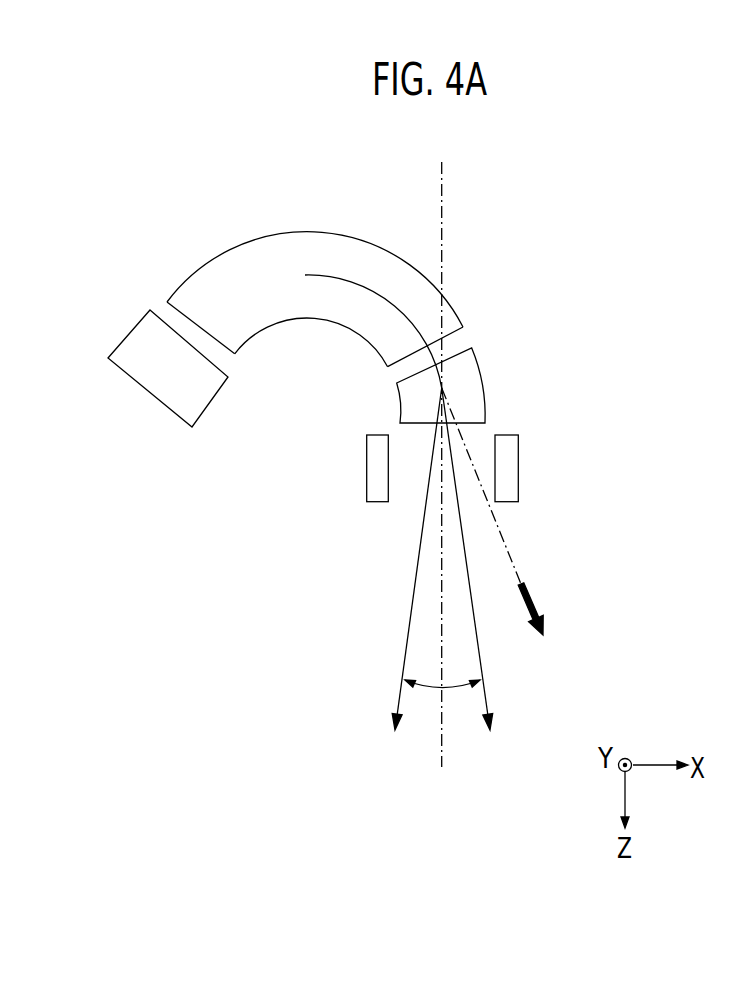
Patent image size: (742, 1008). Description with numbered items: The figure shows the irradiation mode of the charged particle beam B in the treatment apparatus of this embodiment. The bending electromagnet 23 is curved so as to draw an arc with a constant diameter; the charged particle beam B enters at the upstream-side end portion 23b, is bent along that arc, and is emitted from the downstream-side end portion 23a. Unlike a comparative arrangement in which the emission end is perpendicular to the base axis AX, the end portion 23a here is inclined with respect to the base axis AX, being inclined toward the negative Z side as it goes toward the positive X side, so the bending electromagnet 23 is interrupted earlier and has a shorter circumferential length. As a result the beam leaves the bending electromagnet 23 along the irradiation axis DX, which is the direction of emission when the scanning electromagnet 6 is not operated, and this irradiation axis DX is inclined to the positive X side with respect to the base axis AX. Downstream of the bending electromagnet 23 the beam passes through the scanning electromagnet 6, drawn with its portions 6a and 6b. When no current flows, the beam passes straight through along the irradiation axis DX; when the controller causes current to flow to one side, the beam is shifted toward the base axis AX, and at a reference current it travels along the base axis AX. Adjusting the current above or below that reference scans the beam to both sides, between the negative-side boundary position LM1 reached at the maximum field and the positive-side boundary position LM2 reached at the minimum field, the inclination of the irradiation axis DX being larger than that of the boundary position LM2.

The bending electromagnet 23 is at (323, 295).
The downstream-side end portion 23a is at (455, 338).
The upstream-side end portion 23b is at (177, 311).
The scanning electromagnet 6 is at (497, 425).
The first scanning magnet 6a is at (486, 383).
The second scanning magnet 6b is at (481, 468).
The irradiation axis DX is at (513, 558).
The charged particle beam B is at (540, 598).
The negative-side boundary position LM1 is at (405, 650).
The positive-side boundary position LM2 is at (479, 647).
The base axis AX is at (443, 738).